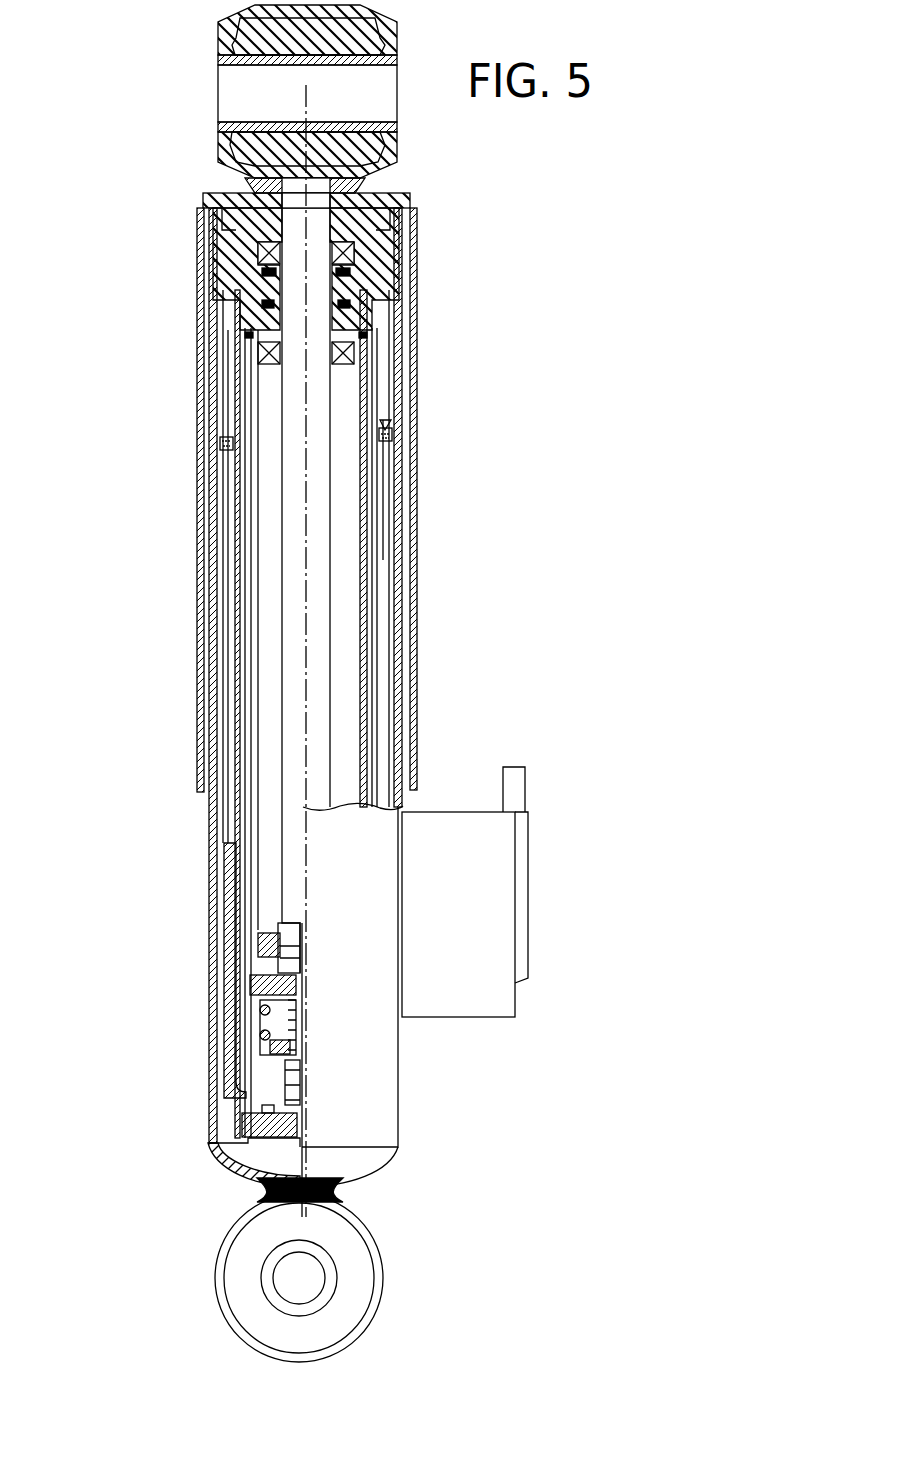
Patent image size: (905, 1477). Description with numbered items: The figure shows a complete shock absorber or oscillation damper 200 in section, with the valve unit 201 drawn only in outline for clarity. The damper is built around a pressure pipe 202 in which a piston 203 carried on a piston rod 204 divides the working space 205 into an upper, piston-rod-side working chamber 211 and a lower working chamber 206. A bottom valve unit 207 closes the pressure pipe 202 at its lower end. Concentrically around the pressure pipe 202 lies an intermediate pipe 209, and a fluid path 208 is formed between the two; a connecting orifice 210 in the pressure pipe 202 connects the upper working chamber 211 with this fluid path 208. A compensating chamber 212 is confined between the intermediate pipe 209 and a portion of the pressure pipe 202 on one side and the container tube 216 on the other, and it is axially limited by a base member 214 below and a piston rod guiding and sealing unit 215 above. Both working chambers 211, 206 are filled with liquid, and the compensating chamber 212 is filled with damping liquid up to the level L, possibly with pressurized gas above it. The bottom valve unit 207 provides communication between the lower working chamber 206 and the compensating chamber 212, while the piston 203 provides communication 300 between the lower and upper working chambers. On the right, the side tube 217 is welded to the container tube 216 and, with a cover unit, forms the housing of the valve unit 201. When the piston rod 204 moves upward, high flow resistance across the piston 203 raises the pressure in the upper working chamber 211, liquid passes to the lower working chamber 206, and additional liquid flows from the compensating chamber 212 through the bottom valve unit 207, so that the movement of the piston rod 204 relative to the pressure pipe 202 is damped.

The oscillation damper 200 is at (163, 668).
The valve unit 201 is at (467, 803).
The pressure pipe 202 is at (368, 607).
The piston 203 is at (245, 1017).
The piston rod 204 is at (320, 497).
The working space 205 is at (263, 465).
The lower working chamber 206 is at (253, 1093).
The bottom valve unit 207 is at (245, 1128).
The fluid path 208 is at (378, 645).
The intermediate pipe 209 is at (377, 693).
The connecting orifice 210 is at (383, 407).
The upper working chamber 211 is at (258, 576).
The compensating chamber 212 is at (383, 573).
The base member 214 is at (210, 1148).
The piston rod guiding and sealing unit 215 is at (385, 300).
The container tube 216 is at (405, 540).
The side tube 217 is at (472, 1018).
The communication 300 is at (300, 1033).
The level L is at (228, 435).